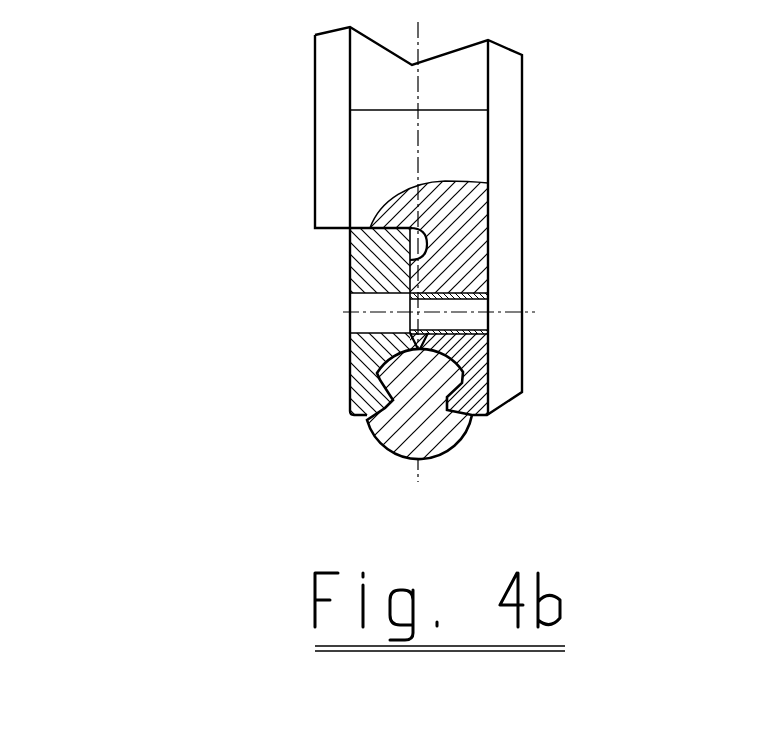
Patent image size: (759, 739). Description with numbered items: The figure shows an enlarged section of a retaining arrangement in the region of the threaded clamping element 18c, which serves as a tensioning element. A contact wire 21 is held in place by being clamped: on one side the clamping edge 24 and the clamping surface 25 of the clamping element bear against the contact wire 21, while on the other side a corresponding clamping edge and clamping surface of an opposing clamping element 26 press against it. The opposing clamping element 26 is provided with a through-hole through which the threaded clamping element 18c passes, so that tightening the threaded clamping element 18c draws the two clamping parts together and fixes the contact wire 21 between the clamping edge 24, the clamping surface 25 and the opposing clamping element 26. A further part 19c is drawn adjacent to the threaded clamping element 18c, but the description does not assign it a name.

The threaded clamping element 18c is at (508, 333).
The bearing block 19c is at (478, 305).
The contact wire 21 is at (402, 438).
The clamping edge 24 is at (440, 403).
The clamping surface 25 is at (420, 352).
The opposing clamping element 26 is at (367, 282).